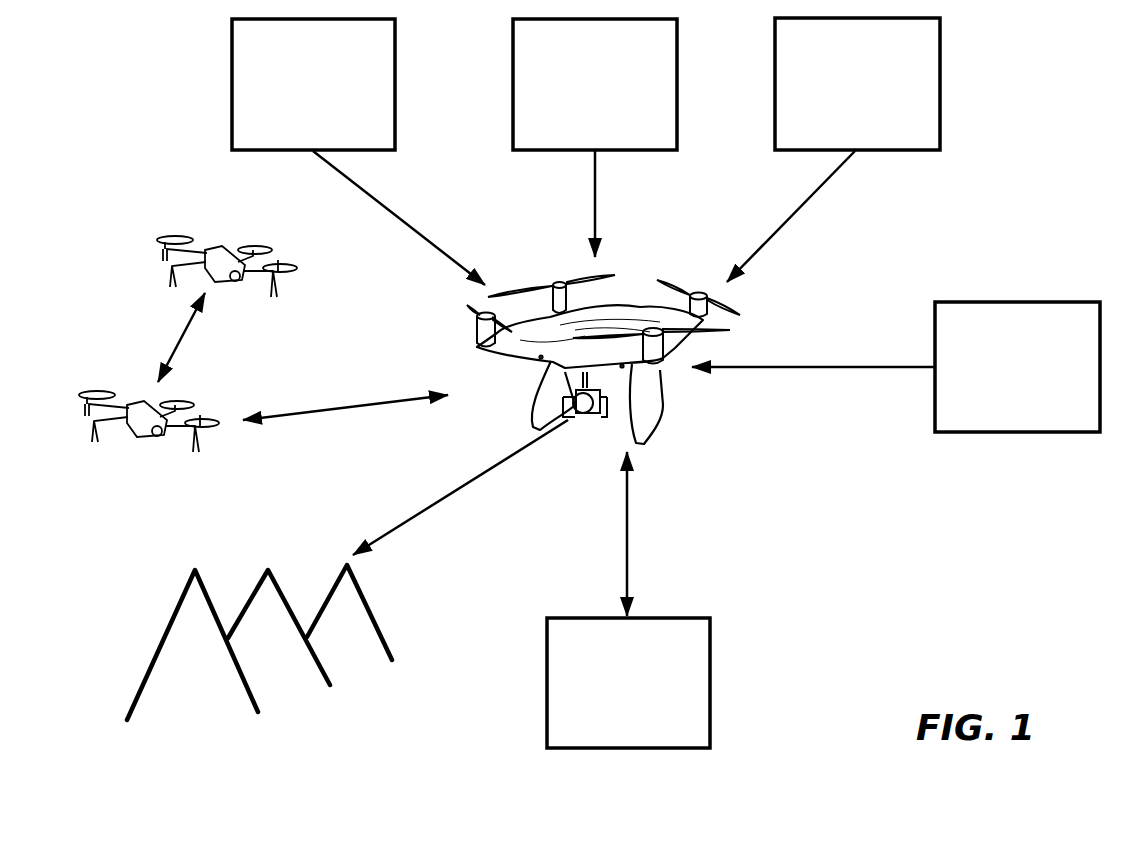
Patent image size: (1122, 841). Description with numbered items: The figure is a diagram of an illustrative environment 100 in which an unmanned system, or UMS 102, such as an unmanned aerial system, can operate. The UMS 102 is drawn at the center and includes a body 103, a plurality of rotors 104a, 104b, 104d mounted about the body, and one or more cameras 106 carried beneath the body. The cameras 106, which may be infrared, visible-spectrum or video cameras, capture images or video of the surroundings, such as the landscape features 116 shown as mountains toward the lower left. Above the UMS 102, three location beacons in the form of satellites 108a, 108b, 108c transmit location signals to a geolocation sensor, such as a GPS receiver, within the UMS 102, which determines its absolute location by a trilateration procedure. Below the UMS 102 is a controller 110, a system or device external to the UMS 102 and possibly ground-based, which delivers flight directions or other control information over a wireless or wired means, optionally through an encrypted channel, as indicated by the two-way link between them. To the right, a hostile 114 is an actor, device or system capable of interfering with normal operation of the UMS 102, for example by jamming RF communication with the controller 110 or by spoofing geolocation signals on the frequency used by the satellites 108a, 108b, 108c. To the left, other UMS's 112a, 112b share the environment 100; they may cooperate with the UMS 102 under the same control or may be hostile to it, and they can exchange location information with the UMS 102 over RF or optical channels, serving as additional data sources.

The environment 100 is at (1006, 80).
The unmanned system (UMS) 102 is at (660, 420).
The body 103 is at (637, 292).
The rotor 104a is at (703, 297).
The rotor 104b is at (478, 323).
The rotor 104d is at (548, 284).
The camera 106 is at (583, 418).
The satellite 108a is at (358, 152).
The satellite 108b is at (595, 138).
The satellite 108c is at (833, 150).
The controller 110 is at (628, 600).
The other UMS 112a is at (173, 285).
The other UMS 112b is at (100, 440).
The hostile 114 is at (896, 367).
The landscape features 116 is at (138, 650).